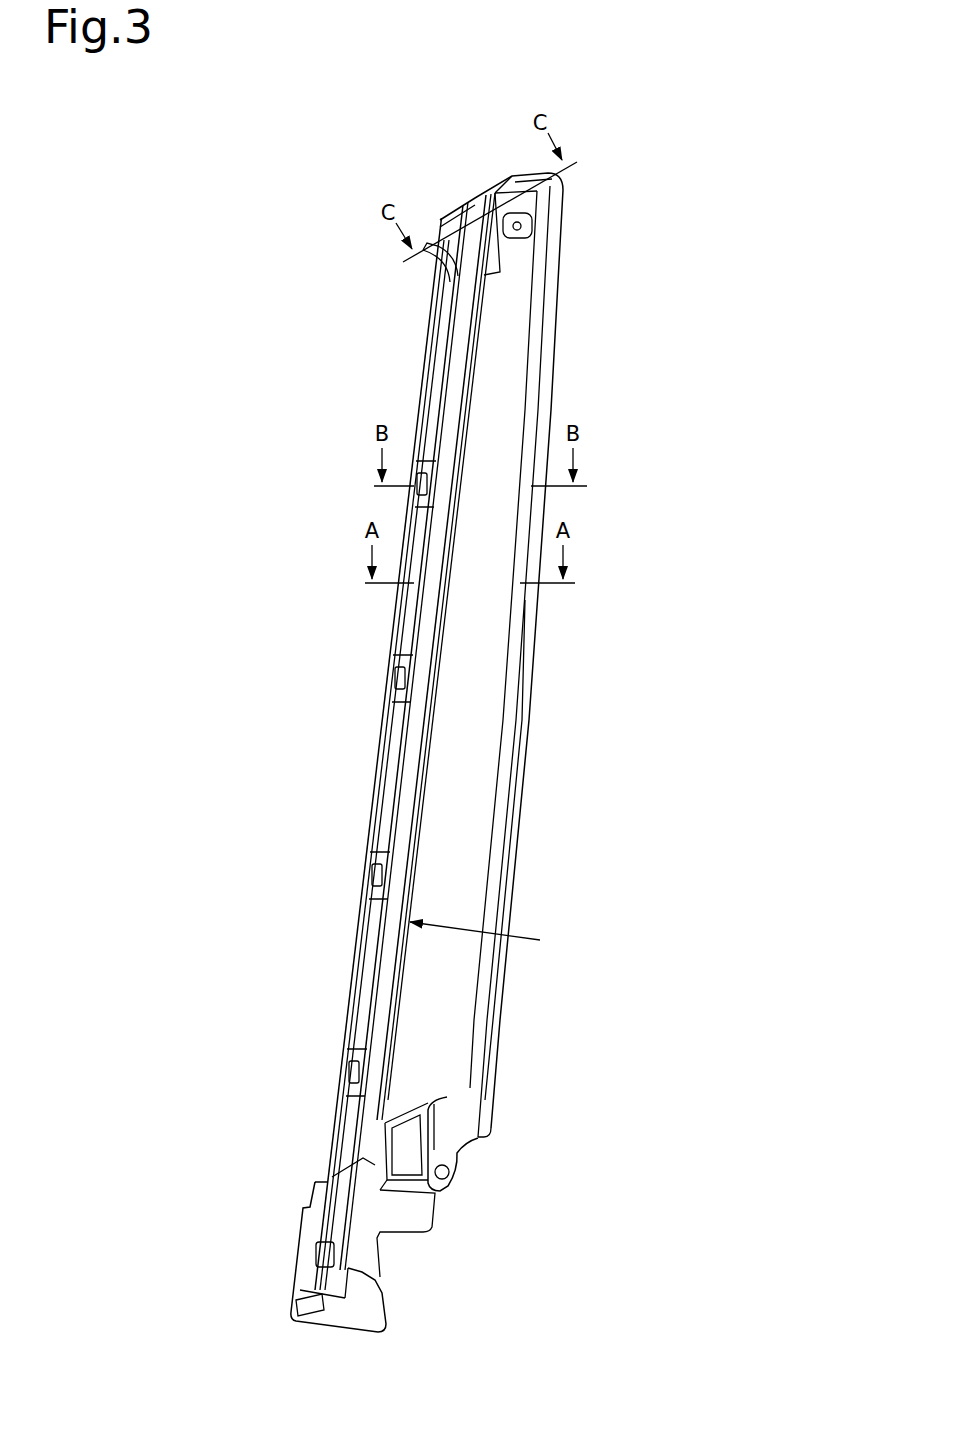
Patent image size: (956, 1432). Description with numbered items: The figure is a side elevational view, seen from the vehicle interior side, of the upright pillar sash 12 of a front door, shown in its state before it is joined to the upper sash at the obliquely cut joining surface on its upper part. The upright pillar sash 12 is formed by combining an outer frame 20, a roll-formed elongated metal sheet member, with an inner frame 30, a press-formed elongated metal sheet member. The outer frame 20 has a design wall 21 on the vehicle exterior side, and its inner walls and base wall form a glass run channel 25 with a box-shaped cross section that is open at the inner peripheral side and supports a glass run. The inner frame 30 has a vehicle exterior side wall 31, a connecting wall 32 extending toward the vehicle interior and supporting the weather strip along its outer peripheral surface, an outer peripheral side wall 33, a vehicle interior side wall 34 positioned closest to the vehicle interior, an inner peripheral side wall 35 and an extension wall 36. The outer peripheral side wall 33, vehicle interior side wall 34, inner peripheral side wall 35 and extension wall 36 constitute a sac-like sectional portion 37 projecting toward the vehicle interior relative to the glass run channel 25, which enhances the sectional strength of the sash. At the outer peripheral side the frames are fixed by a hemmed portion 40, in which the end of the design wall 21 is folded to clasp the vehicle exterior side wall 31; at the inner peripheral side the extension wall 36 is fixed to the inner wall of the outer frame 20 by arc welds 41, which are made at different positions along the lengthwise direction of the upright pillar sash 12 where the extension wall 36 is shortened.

The upright pillar sash 12 is at (608, 217).
The outer frame 20 is at (447, 207).
The glass run channel 25 is at (440, 262).
The design wall 21 is at (493, 188).
The inner frame 30 is at (434, 1070).
The vehicle exterior side wall 31 is at (472, 690).
The connecting wall 32 is at (437, 660).
The outer peripheral side wall 33 is at (438, 656).
The vehicle interior side wall 34 is at (413, 755).
The inner peripheral side wall 35 is at (413, 632).
The extension wall 36 is at (440, 352).
The sac-like sectional portion 37 is at (491, 939).
The hemmed portion 40 is at (512, 782).
The arc welds 41 is at (418, 477).